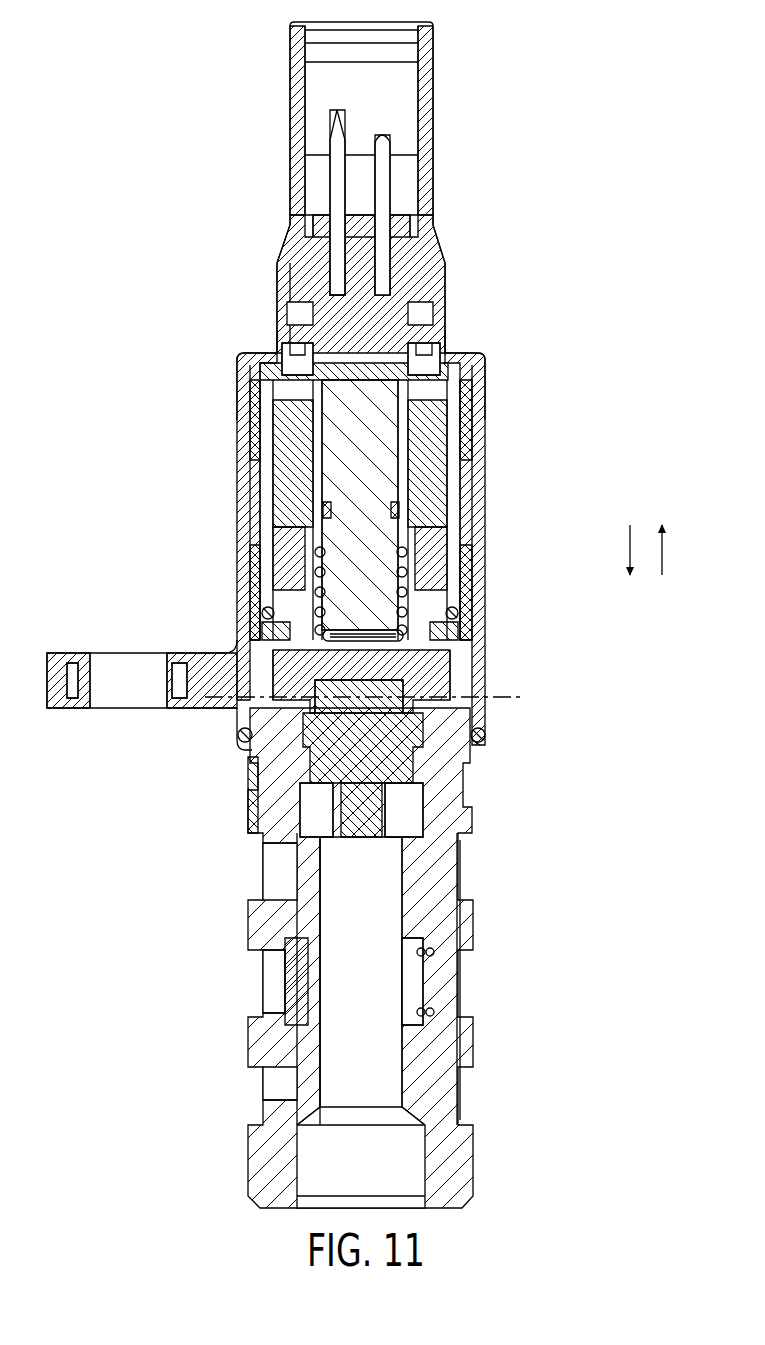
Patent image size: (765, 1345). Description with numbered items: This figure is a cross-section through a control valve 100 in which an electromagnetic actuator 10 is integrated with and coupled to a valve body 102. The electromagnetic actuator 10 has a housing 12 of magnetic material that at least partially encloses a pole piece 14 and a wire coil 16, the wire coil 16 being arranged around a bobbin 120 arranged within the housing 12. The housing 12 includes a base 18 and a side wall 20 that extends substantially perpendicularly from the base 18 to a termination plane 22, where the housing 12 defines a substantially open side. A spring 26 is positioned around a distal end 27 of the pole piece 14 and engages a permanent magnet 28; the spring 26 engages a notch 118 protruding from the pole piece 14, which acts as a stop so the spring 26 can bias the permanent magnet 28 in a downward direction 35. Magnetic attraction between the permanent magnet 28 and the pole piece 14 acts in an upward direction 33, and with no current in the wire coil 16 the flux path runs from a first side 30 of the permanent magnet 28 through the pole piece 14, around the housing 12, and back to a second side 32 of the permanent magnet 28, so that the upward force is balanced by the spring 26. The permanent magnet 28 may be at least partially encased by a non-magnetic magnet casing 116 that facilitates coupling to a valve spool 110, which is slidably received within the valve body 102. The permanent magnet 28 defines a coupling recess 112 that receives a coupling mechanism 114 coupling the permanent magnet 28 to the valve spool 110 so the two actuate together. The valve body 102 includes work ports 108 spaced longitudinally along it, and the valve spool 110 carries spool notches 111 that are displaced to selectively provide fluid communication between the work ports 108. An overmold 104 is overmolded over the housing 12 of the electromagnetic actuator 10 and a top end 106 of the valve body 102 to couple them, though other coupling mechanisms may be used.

The control valve 100 is at (200, 55).
The electromagnetic actuator 10 is at (457, 341).
The housing 12 is at (476, 406).
The pole piece 14 is at (342, 432).
The wire coil 16 is at (432, 497).
The base 18 is at (358, 368).
The side wall 20 is at (466, 553).
The termination plane 22 is at (243, 705).
The spring 26 is at (332, 550).
The distal end 27 is at (420, 697).
The permanent magnet 28 is at (436, 685).
The first side 30 is at (330, 657).
The second side 32 is at (262, 757).
The upward direction 33 is at (666, 553).
The downward direction 35 is at (626, 543).
The valve body 102 is at (440, 814).
The overmold 104 is at (298, 358).
The top end 106 is at (454, 739).
The work ports 108 is at (288, 863).
The valve spool 110 is at (414, 887).
The spool notches 111 is at (307, 873).
The coupling recess 112 is at (337, 716).
The coupling mechanism 114 is at (377, 705).
The magnet casing 116 is at (436, 642).
The notch 118 is at (402, 524).
The bobbin 120 is at (448, 364).